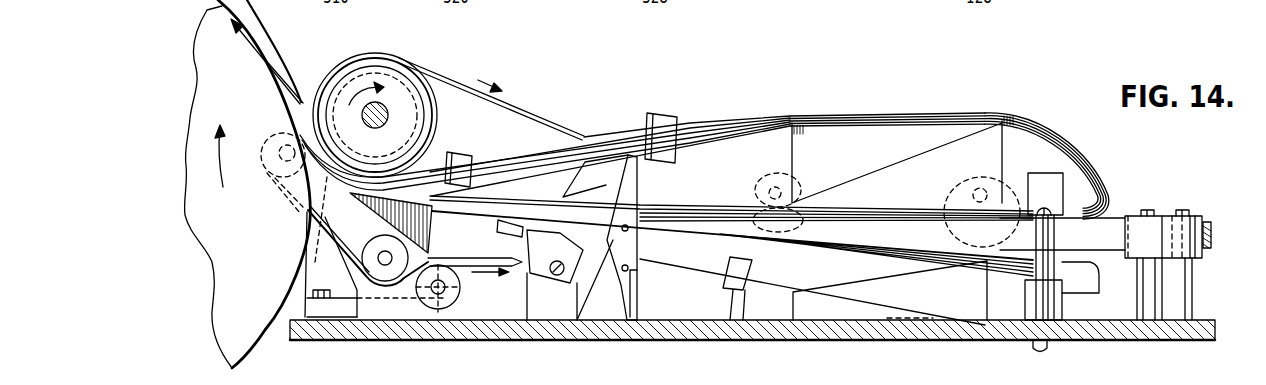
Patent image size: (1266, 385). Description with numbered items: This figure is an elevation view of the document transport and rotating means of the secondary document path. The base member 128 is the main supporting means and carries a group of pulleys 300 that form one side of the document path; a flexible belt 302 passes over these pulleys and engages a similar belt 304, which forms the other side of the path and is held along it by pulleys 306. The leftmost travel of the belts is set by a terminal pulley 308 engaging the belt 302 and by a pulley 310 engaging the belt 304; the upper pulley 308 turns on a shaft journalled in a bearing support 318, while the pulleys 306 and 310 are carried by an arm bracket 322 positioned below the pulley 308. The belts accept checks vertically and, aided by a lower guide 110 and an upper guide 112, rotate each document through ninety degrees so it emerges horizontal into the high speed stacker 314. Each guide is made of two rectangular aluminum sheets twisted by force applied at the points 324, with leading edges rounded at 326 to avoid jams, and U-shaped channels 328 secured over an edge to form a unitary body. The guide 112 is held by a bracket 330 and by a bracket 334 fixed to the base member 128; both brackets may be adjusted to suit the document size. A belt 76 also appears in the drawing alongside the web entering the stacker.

The high speed stacker 314 is at (200, 80).
The feed belt 76 is at (277, 70).
The terminal pulley 308 is at (374, 62).
The bearing support 318 is at (415, 100).
The flexible belt 302 is at (532, 106).
The U-shaped channels 328 is at (460, 152).
The bracket 334 is at (640, 182).
The points 324 is at (792, 145).
The upper guide 112 is at (855, 112).
The pulleys 300 is at (793, 172).
The bracket 330 is at (1047, 183).
The rounded leading edges 326 is at (1101, 159).
The pulleys 306 is at (1197, 216).
The belt 304 is at (468, 278).
The arm bracket 322 is at (429, 237).
The pulley 310 is at (266, 190).
The base member 128 is at (837, 340).
The lower guide 110 is at (951, 305).